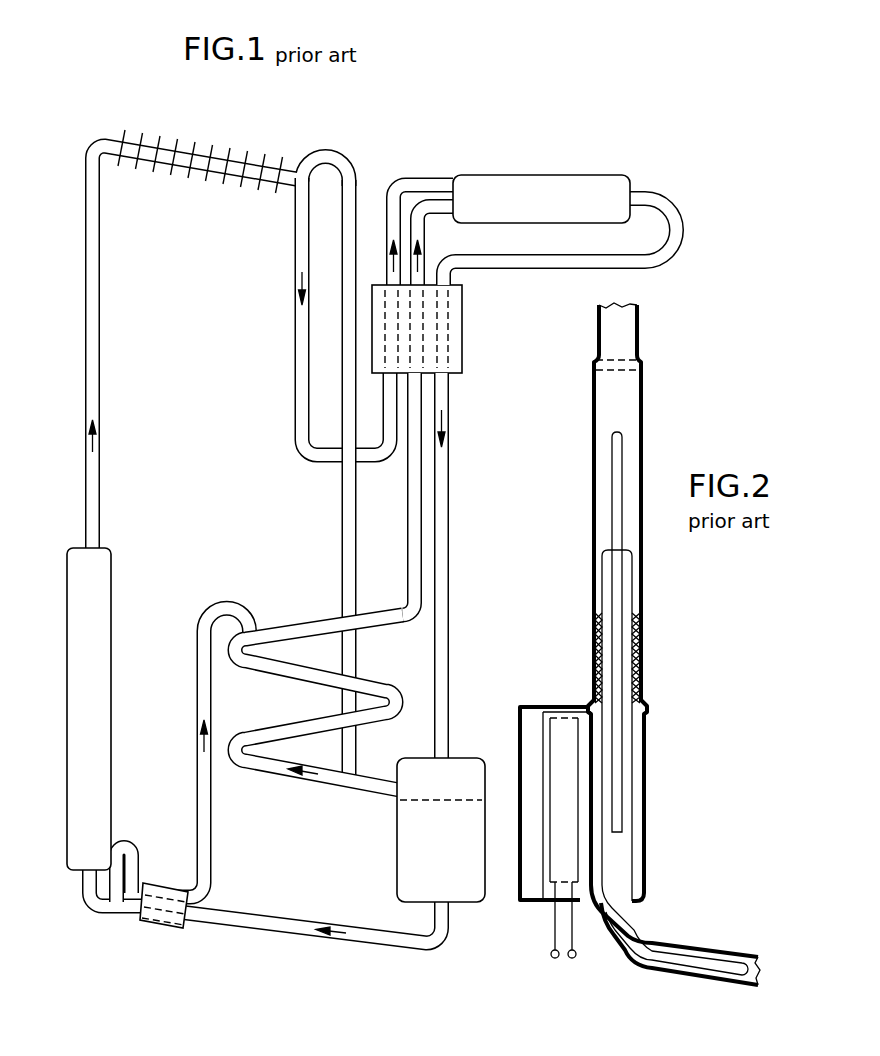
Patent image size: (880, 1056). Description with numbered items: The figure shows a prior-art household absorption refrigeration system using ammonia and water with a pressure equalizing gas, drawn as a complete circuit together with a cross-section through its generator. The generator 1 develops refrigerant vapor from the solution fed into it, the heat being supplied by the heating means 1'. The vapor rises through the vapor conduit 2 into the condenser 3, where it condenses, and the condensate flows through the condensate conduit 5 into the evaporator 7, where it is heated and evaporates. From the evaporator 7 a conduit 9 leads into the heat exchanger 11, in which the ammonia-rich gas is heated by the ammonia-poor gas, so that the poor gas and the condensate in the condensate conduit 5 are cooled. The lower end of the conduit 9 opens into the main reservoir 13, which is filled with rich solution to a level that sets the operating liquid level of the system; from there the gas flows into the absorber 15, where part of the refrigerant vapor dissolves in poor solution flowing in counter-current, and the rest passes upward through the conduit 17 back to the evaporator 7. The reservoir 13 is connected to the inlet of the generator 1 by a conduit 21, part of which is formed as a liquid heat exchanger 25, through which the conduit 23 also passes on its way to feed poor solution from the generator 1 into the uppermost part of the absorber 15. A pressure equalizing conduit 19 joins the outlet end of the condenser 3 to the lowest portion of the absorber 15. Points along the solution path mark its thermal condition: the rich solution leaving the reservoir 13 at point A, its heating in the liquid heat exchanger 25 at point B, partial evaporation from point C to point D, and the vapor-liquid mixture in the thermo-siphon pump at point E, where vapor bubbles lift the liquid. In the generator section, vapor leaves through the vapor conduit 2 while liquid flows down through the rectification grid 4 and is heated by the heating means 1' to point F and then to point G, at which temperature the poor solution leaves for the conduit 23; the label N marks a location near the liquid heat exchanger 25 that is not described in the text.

In FIG. 1, the generator 1 is at (102, 709).
In FIG. 2, the generator 1 is at (640, 644).
In FIG. 2, the heating means 1' is at (545, 838).
In FIG. 1, the vapor conduit 2 is at (95, 315).
In FIG. 1, the condenser 3 is at (205, 160).
In FIG. 2, the rectification grid 4 is at (641, 640).
In FIG. 1, the condensate conduit 5 is at (300, 318).
In FIG. 1, the evaporator 7 is at (575, 186).
In FIG. 1, the conduit 9 is at (548, 268).
In FIG. 1, the heat exchanger 11 is at (455, 335).
In FIG. 1, the main reservoir 13 is at (465, 768).
In FIG. 1, the absorber 15 is at (285, 724).
In FIG. 1, the conduit 17 is at (410, 508).
In FIG. 1, the pressure equalizing conduit 19 is at (342, 540).
In FIG. 1, the conduit 21 is at (303, 925).
In FIG. 2, the conduit 21 is at (730, 952).
In FIG. 1, the conduit 23 is at (210, 842).
In FIG. 2, the conduit 23 is at (708, 957).
In FIG. 1, the liquid heat exchanger 25 is at (150, 910).
In FIG. 1, the point A is at (238, 928).
In FIG. 1, the point B is at (165, 912).
In FIG. 2, the point B is at (688, 948).
In FIG. 1, the point C is at (160, 945).
In FIG. 2, the point C is at (700, 925).
In FIG. 1, the point D is at (120, 910).
In FIG. 2, the point D is at (625, 915).
In FIG. 1, the point E is at (92, 548).
In FIG. 2, the point E is at (617, 432).
In FIG. 2, the point F is at (646, 702).
In FIG. 2, the point G is at (598, 920).
In FIG. 1, the point N is at (205, 896).